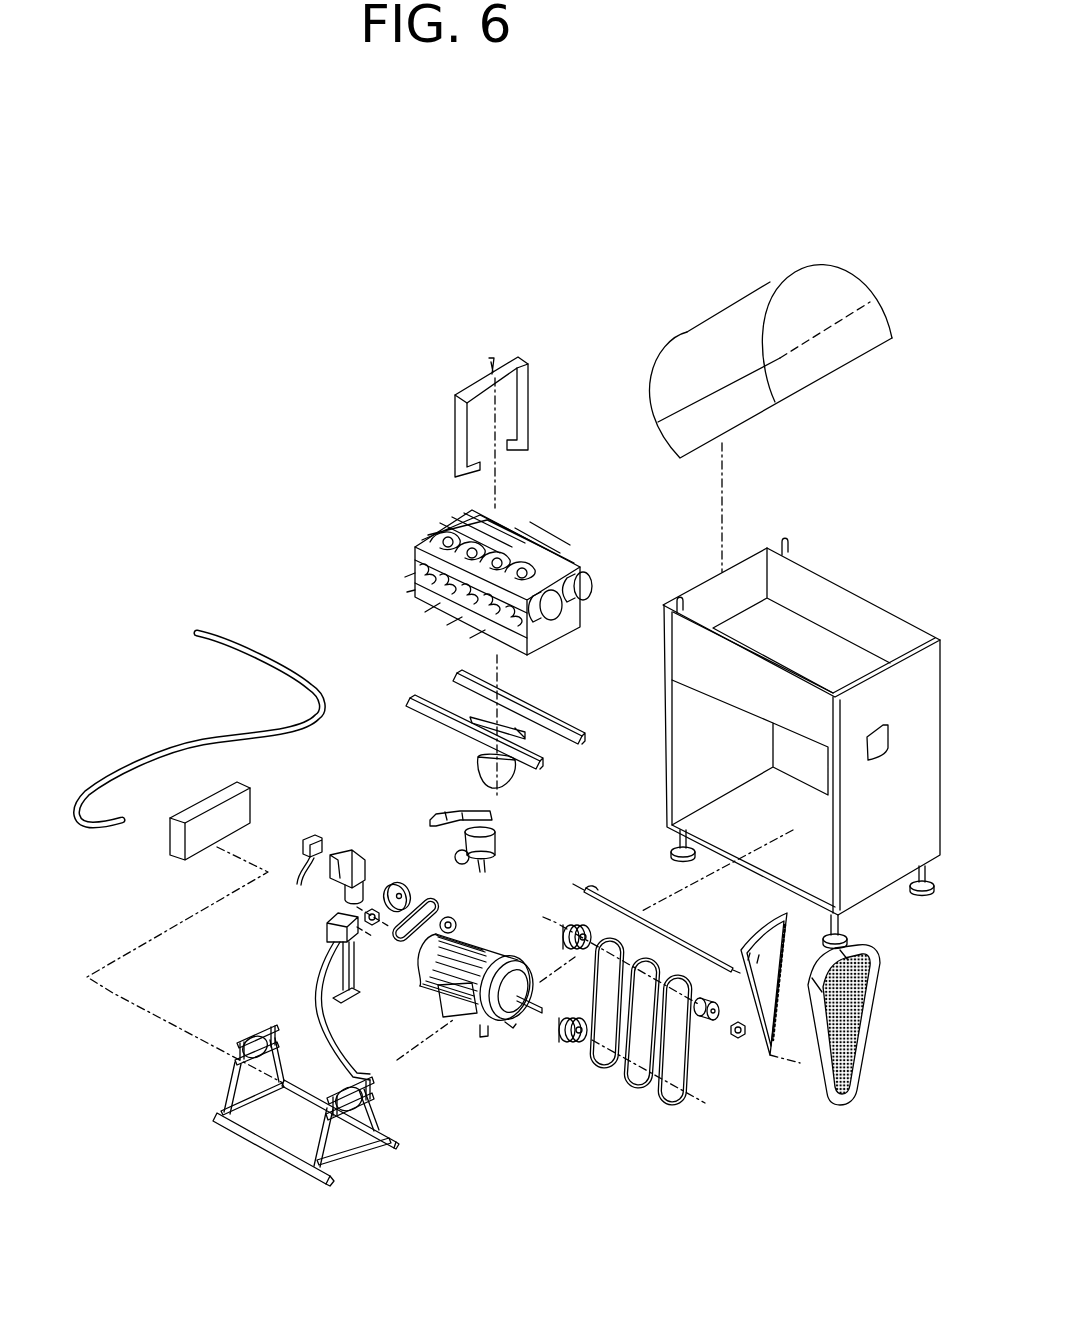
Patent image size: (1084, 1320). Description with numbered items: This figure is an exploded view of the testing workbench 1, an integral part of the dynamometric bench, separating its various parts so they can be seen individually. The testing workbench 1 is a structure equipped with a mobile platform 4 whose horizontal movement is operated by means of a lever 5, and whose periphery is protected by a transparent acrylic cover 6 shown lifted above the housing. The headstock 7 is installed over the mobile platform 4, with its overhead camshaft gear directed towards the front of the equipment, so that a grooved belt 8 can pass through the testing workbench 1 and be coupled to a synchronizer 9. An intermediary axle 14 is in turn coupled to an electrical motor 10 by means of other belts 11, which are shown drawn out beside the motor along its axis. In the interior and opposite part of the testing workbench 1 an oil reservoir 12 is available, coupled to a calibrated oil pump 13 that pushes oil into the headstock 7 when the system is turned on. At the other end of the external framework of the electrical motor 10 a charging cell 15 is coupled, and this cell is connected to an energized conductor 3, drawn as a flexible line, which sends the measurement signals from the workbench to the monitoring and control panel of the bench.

The testing workbench 1 is at (828, 603).
The conductor 3 is at (200, 743).
The mobile platform 4 is at (483, 717).
The lever 5 is at (432, 823).
The transparent acrylic cover 6 is at (685, 377).
The headstock 7 is at (413, 547).
The grooved belt 8 is at (772, 1055).
The synchronizer 9 is at (712, 1022).
The electrical motor 10 is at (502, 1023).
The belts 11 is at (678, 1090).
The oil reservoir 12 is at (197, 837).
The calibrated oil pump 13 is at (331, 878).
The intermediary axle 14 is at (613, 900).
The charging cell 15 is at (337, 927).